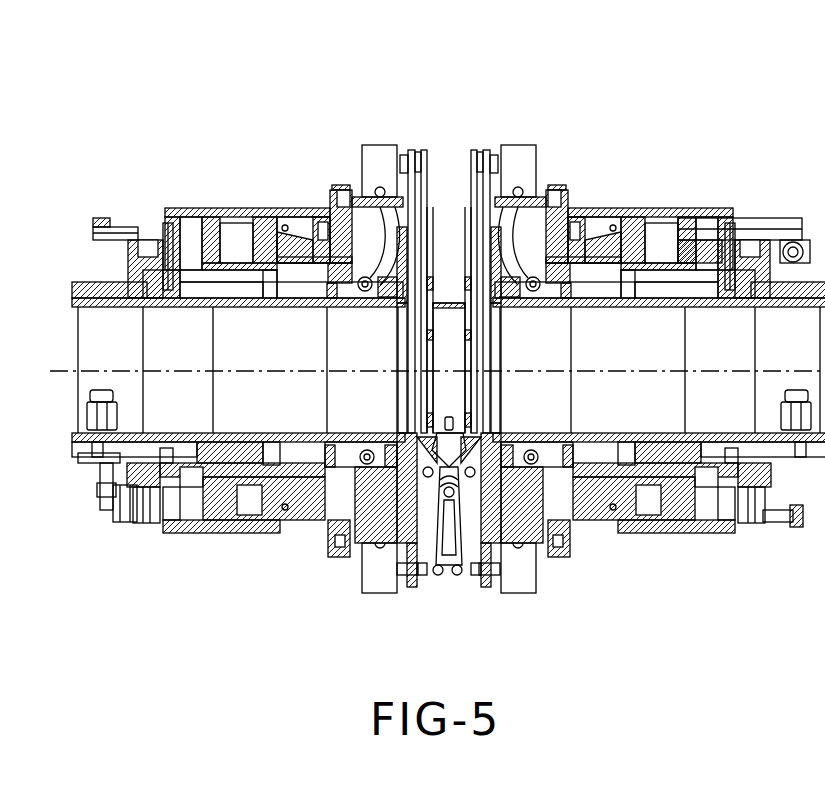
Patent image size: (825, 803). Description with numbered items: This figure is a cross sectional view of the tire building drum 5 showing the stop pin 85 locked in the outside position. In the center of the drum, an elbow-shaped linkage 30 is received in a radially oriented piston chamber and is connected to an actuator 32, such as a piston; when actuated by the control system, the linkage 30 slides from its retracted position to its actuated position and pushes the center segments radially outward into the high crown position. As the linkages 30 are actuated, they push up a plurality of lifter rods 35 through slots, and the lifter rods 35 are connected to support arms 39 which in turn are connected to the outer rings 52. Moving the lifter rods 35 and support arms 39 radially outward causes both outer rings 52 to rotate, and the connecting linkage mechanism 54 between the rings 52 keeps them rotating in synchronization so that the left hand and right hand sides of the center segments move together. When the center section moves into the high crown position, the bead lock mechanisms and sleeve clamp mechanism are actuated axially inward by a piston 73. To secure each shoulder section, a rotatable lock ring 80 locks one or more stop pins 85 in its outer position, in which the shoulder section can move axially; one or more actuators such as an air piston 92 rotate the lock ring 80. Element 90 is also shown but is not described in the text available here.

The tire building drum 5 is at (66, 152).
The elbow-shaped linkage 30 is at (360, 204).
The actuator 32 is at (323, 257).
The lifter rods 35 is at (380, 167).
The support arms 39 is at (412, 152).
The outer rings 52 is at (425, 150).
The linkage mechanism 54 is at (470, 555).
The piston 73 is at (267, 257).
The rotatable lock ring 80 is at (153, 243).
The stop pin 85 is at (133, 515).
The arm 90 is at (133, 258).
The air piston 92 is at (107, 482).